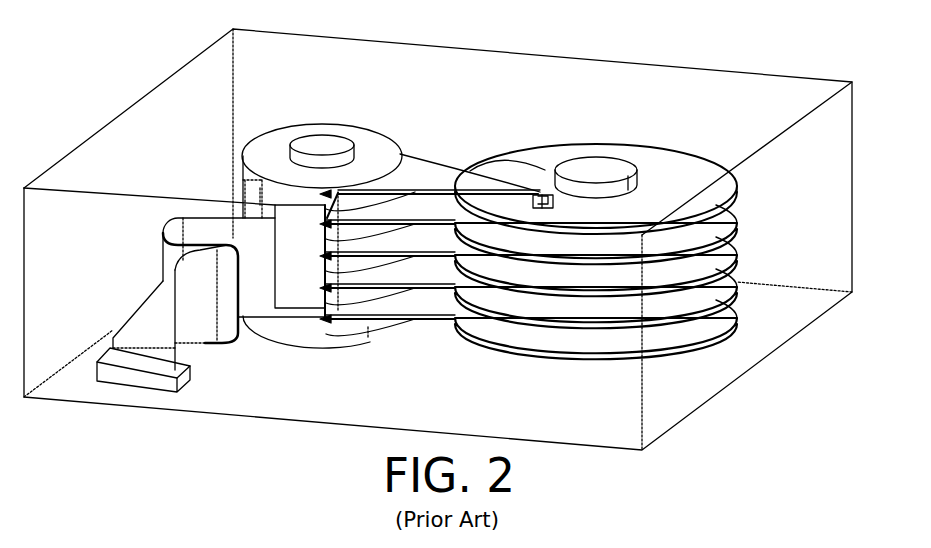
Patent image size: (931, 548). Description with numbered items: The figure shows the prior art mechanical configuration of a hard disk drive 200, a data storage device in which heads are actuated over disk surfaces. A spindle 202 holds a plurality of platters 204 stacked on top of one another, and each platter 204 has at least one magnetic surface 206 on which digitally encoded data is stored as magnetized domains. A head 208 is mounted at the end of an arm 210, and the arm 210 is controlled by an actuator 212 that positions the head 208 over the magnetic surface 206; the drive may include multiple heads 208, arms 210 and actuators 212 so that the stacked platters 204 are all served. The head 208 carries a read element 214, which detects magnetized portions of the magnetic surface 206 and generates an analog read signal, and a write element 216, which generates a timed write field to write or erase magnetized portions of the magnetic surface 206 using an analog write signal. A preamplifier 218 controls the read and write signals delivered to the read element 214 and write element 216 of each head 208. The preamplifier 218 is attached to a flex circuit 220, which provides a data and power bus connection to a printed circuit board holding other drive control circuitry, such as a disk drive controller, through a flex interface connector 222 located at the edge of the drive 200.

The hard disk drive 200 is at (104, 58).
The spindle 202 is at (593, 157).
The platter 204 is at (670, 148).
The magnetic surface 206 is at (638, 228).
The head 208 is at (553, 197).
The arm 210 is at (425, 170).
The actuator 212 is at (350, 133).
The read element 214 is at (547, 193).
The write element 216 is at (540, 192).
The preamplifier 218 is at (293, 213).
The flex circuit 220 is at (287, 312).
The flex interface connector 222 is at (127, 375).